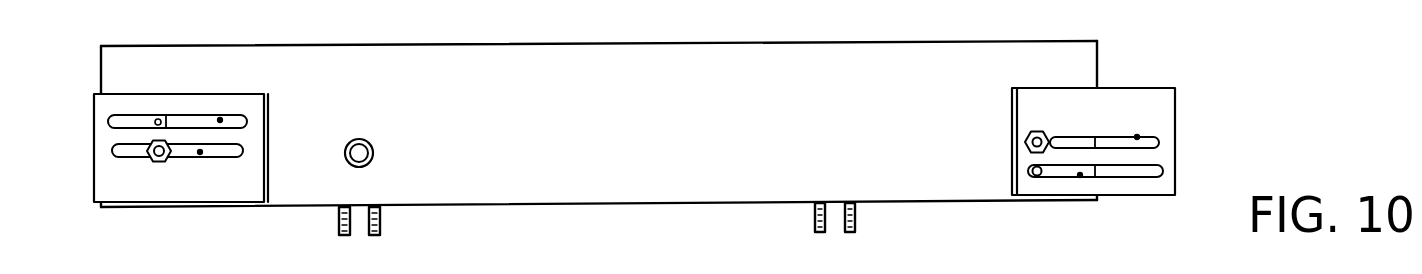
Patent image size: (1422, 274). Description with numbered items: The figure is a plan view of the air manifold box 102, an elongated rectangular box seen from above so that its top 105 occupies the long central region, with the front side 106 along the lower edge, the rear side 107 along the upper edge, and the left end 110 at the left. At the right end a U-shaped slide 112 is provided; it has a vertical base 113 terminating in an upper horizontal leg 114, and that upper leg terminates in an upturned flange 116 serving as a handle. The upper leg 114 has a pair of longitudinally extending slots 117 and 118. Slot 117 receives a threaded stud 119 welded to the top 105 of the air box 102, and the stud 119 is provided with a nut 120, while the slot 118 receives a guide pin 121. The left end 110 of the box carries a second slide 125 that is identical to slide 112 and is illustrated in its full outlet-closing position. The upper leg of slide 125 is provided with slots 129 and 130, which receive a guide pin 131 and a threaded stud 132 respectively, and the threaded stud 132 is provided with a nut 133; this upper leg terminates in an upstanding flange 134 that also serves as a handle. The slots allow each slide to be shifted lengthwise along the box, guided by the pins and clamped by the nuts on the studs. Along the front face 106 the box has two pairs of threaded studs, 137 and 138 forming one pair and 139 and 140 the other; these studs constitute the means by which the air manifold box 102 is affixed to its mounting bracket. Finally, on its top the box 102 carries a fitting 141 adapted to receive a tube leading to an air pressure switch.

The air manifold box 102 is at (602, 126).
The top 105 is at (638, 133).
The front side 106 is at (655, 208).
The rear side 107 is at (568, 44).
The left end 110 is at (110, 72).
The U-shaped slide 112 is at (1104, 163).
The vertical base 113 is at (1177, 133).
The upper horizontal leg 114 is at (1143, 190).
The upturned flange 116 is at (1011, 152).
The slot 117 is at (1139, 120).
The slot 118 is at (1079, 176).
The threaded stud 119 is at (1041, 133).
The nut 120 is at (1026, 137).
The guide pin 121 is at (1035, 177).
The slide 125 is at (170, 126).
The slot 129 is at (218, 117).
The slot 130 is at (198, 155).
The guide pin 131 is at (156, 118).
The threaded stud 132 is at (163, 161).
The nut 133 is at (150, 155).
The upstanding flange 134 is at (268, 110).
The stud 137 is at (815, 218).
The stud 138 is at (855, 220).
The stud 139 is at (381, 230).
The stud 140 is at (339, 227).
The fitting 141 is at (370, 145).